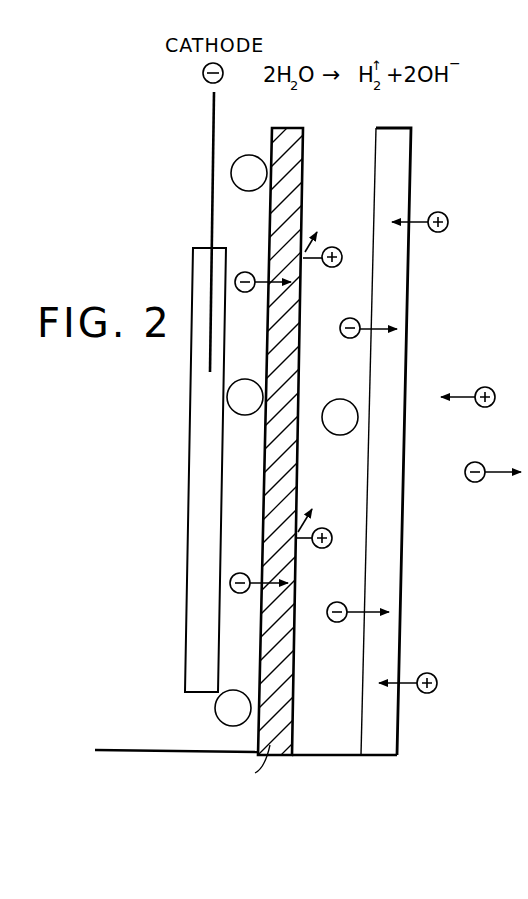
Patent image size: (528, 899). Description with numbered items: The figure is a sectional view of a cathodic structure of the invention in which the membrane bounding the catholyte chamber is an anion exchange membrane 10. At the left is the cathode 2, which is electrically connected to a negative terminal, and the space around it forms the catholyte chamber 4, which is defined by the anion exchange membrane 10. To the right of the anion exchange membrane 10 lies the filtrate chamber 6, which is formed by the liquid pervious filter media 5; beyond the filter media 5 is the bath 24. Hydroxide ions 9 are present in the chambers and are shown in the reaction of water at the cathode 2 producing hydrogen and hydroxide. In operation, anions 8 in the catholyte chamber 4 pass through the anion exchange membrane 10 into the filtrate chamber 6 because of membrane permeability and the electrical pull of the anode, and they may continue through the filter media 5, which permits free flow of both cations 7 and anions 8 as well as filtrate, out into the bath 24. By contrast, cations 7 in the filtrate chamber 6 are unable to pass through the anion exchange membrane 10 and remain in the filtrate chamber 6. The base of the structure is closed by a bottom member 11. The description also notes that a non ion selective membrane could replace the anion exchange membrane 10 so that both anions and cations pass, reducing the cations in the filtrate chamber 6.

The cathode 2 is at (213, 123).
The catholyte chamber 4 is at (245, 130).
The liquid pervious filter media 5 is at (403, 153).
The filtrate chamber 6 is at (341, 150).
The cations 7 is at (339, 250).
The anions 8 is at (246, 272).
The hydroxide ions 9 is at (241, 158).
The anion exchange membrane 10 is at (292, 130).
The cell bottom / base 11 is at (358, 756).
The bath 24 is at (470, 335).